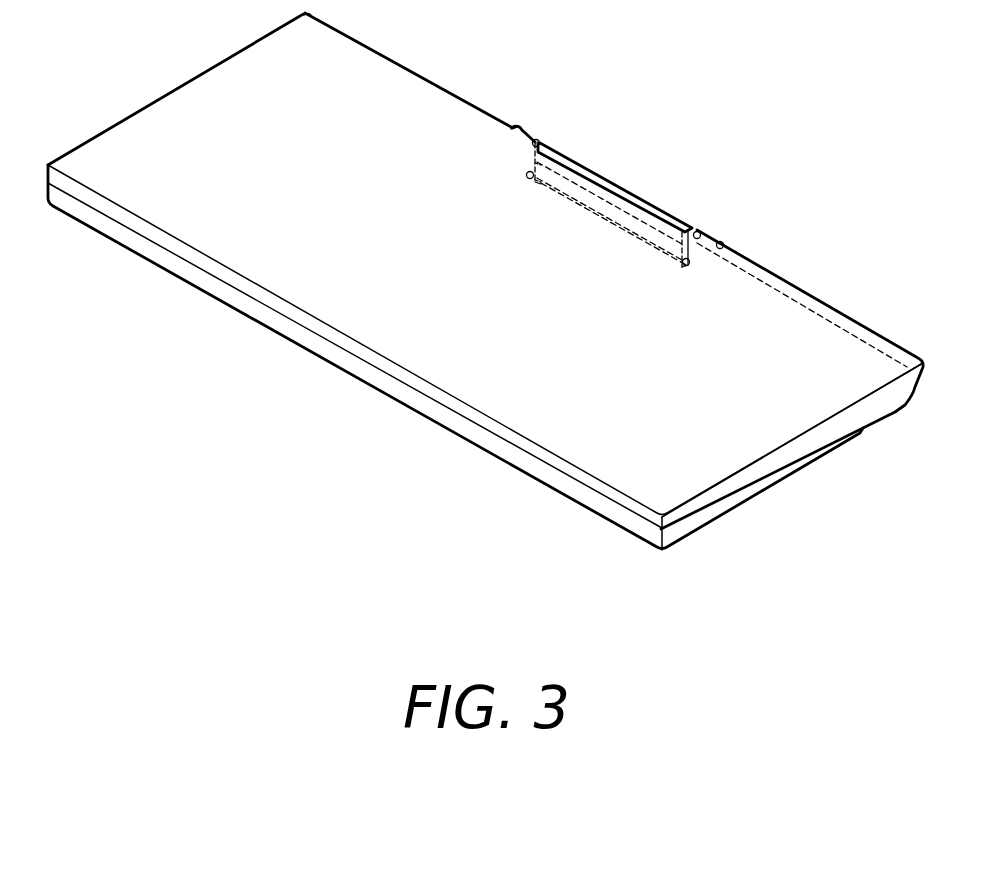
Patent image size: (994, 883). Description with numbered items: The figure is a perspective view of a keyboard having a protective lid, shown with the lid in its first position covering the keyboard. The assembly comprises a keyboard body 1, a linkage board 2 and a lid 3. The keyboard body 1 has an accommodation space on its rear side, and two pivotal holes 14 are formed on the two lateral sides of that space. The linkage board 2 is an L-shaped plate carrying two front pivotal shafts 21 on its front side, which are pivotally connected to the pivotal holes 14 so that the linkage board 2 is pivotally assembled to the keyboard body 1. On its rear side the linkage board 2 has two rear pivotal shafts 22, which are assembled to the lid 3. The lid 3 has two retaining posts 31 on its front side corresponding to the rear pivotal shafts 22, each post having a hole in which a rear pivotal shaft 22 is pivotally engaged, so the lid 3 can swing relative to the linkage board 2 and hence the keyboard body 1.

The keyboard body 1 is at (537, 473).
The linkage board 2 is at (620, 189).
The lid 3 is at (718, 472).
The pivotal holes 14 is at (692, 267).
The front pivotal shafts 21 is at (530, 174).
The rear pivotal shafts 22 is at (692, 228).
The retaining posts 31 is at (520, 127).